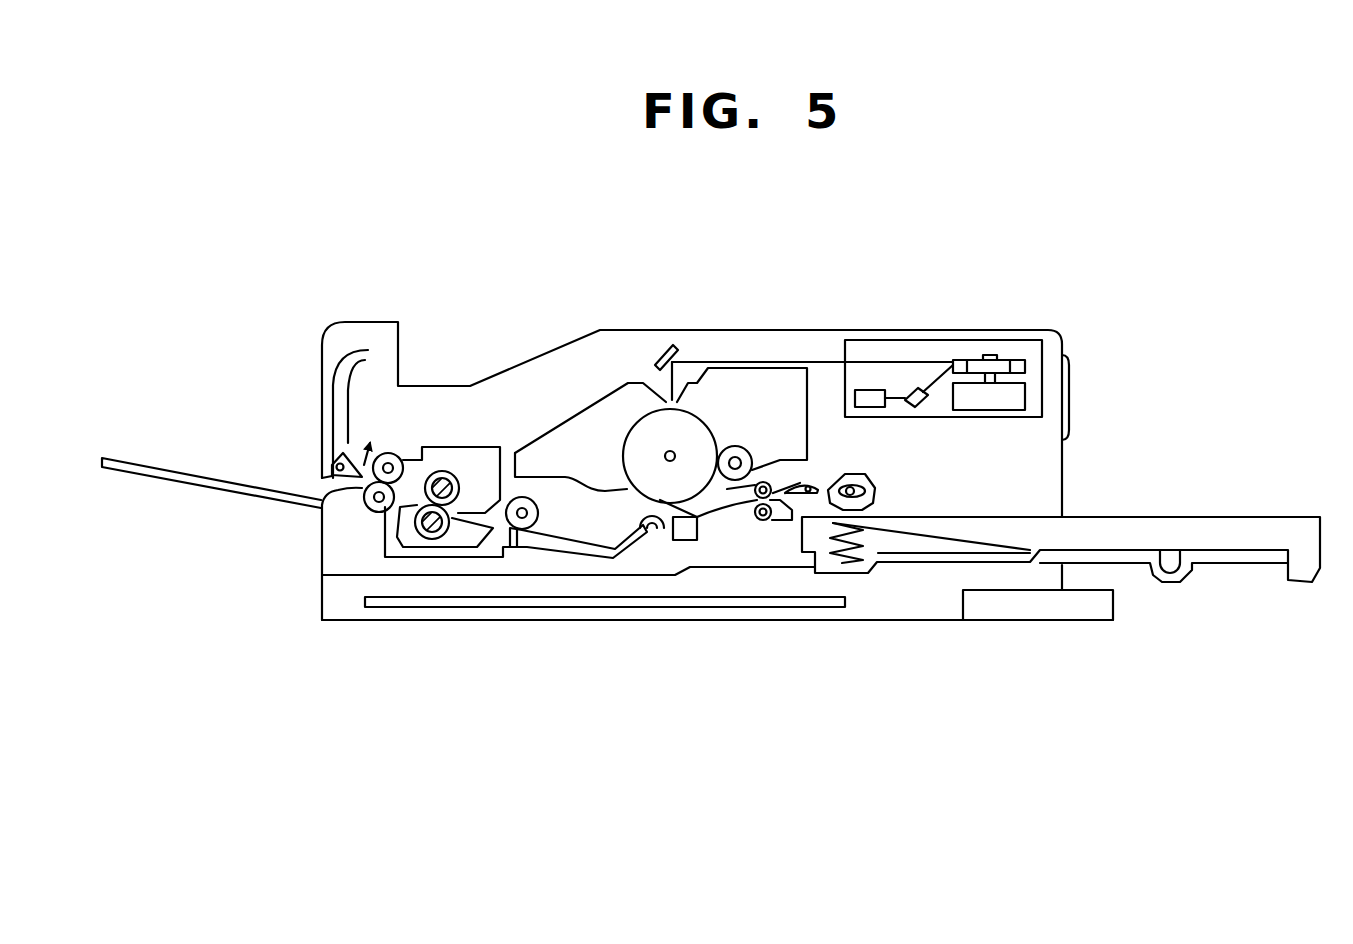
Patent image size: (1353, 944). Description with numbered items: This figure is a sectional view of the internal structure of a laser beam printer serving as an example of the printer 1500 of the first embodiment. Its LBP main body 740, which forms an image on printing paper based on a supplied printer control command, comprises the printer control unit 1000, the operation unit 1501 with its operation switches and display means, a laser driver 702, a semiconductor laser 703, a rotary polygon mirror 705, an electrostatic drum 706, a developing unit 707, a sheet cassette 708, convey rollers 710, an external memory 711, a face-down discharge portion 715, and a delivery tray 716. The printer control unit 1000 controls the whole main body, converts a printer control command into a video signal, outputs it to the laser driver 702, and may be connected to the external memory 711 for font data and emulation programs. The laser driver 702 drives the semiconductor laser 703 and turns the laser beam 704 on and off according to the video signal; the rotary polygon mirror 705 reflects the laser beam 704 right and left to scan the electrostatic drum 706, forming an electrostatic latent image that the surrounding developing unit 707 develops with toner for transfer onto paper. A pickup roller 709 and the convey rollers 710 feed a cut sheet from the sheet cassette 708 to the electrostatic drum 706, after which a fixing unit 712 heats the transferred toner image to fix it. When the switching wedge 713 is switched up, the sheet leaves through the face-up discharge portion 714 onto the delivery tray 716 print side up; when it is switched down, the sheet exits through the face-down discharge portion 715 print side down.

The printer 1500 is at (756, 278).
The operation unit 1501 is at (1069, 393).
The printer control unit 1000 is at (383, 608).
The laser driver 702 is at (868, 408).
The semiconductor laser 703 is at (920, 408).
The laser beam 704 is at (882, 362).
The rotary polygon mirror 705 is at (1023, 360).
The LBP main body 740 is at (970, 339).
The electrostatic drum 706 is at (633, 418).
The developing unit 707 is at (560, 455).
The sheet cassette 708 is at (1182, 516).
The pickup roller 709 is at (878, 490).
The convey rollers 710 is at (756, 519).
The external memory 711 is at (1093, 620).
The fixing unit 712 is at (450, 466).
The switching wedge 713 is at (322, 463).
The face-up discharge portion 714 is at (322, 504).
The face-down discharge portion 715 is at (400, 357).
The delivery tray 716 is at (165, 468).